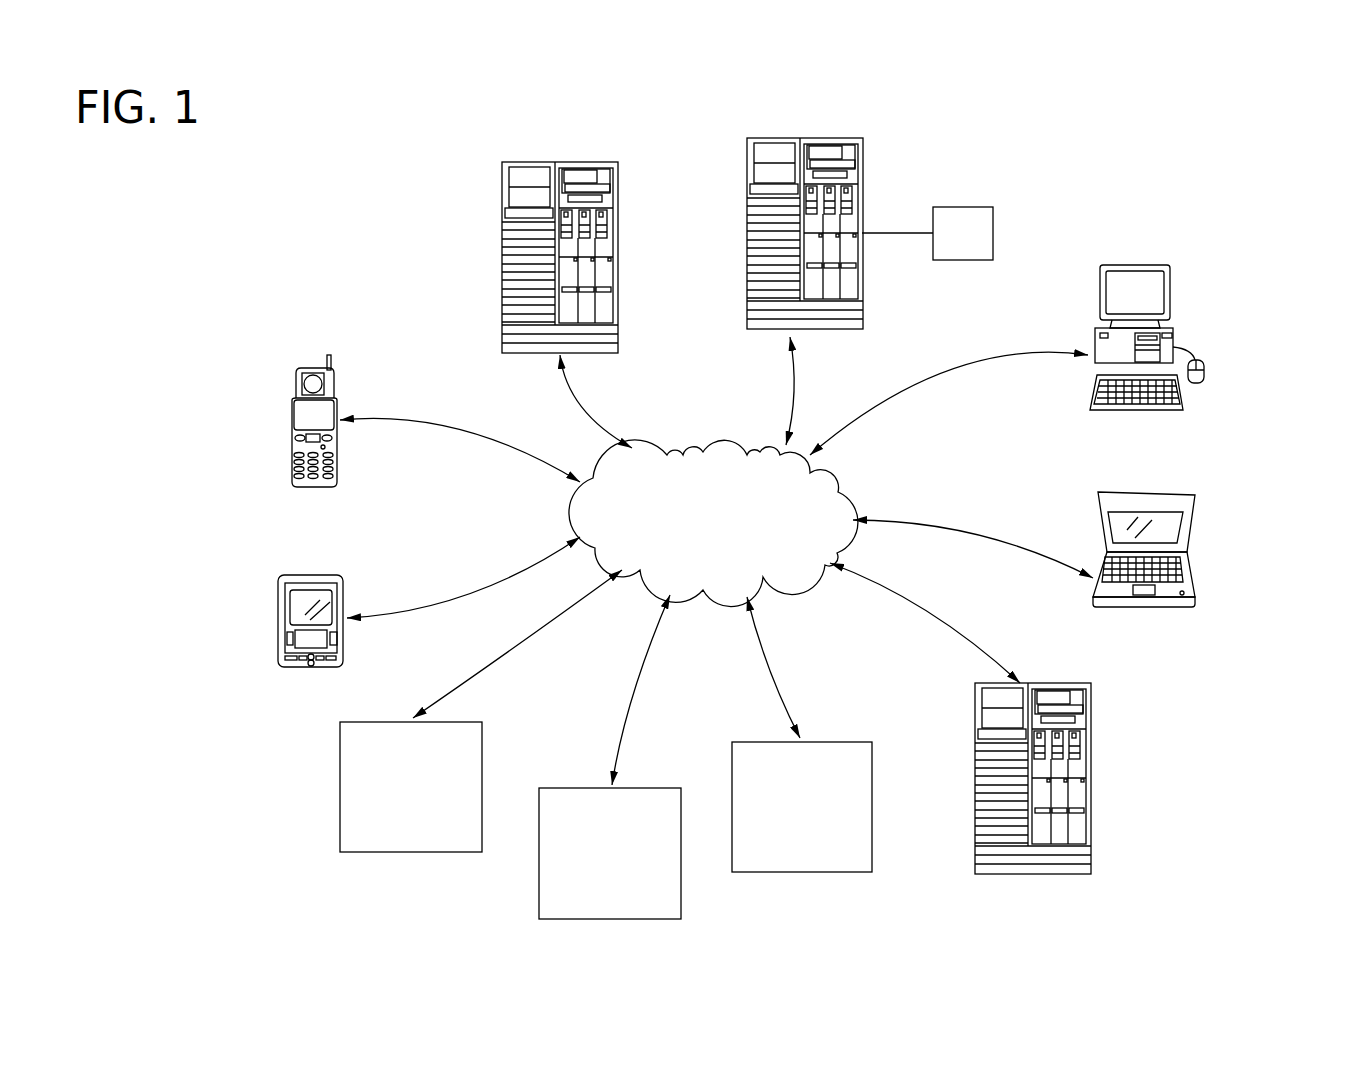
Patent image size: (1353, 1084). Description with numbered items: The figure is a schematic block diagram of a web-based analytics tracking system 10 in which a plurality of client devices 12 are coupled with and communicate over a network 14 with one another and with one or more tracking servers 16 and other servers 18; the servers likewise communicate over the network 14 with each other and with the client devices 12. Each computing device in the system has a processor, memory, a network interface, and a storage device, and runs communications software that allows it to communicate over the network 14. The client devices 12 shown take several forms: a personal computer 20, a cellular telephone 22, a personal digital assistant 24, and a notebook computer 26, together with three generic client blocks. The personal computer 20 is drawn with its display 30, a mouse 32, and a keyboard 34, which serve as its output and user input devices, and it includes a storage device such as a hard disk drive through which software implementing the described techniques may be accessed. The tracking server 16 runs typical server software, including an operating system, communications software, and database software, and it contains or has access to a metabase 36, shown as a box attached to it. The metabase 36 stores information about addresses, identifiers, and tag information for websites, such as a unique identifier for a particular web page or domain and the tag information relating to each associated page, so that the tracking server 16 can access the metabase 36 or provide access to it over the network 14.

The web-based analytics tracking system 10 is at (326, 251).
The client device 12 is at (395, 826).
The network 14 is at (700, 552).
The tracking server 16 is at (830, 138).
The other server 18 is at (583, 162).
The personal computer 20 is at (1153, 304).
The cellular telephone 22 is at (292, 410).
The personal digital assistant 24 is at (278, 610).
The notebook computer 26 is at (1183, 570).
The display 30 is at (1168, 293).
The mouse 32 is at (1205, 370).
The keyboard 34 is at (1093, 388).
The metabase 36 is at (963, 207).